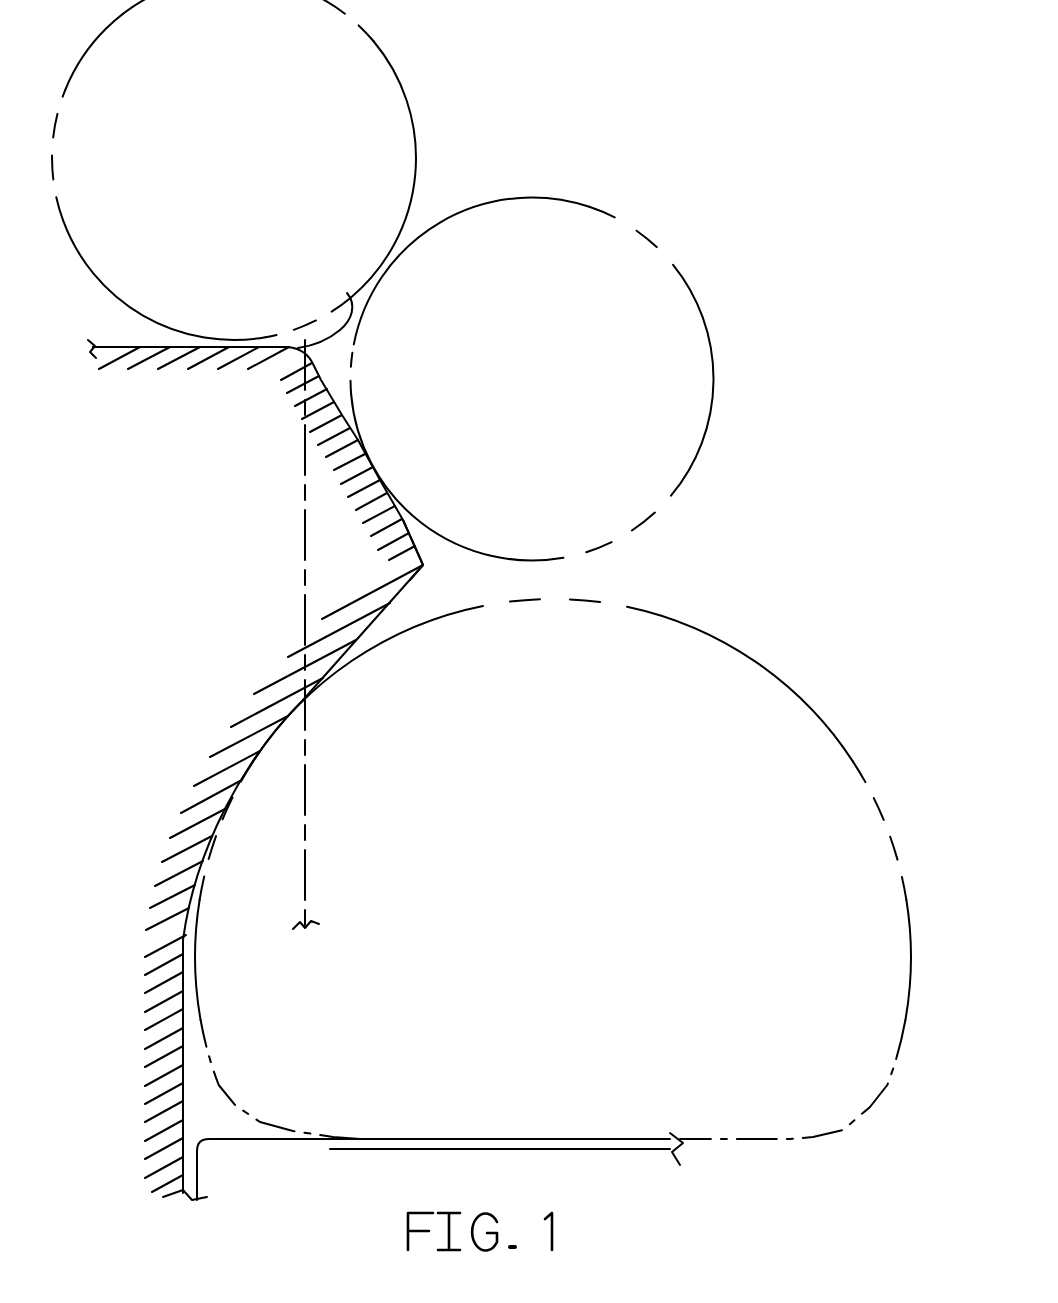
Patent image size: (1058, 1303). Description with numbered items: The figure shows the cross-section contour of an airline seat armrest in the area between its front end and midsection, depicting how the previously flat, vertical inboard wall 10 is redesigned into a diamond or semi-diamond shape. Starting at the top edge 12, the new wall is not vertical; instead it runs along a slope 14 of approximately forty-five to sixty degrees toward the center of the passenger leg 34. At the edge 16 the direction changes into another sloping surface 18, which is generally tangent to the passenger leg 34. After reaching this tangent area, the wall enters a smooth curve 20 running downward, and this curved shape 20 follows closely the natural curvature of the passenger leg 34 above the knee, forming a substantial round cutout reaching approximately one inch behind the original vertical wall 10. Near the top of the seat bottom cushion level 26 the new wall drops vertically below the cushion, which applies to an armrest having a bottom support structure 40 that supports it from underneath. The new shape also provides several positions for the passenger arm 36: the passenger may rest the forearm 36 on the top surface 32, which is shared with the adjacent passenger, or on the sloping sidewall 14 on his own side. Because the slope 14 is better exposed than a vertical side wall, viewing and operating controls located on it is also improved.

The inboard wall 10 is at (305, 500).
The top edge 12 is at (341, 301).
The slope 14 is at (360, 433).
The edge 16 is at (425, 565).
The sloping surface 18 is at (382, 640).
The smooth curve 20 is at (209, 842).
The seat bottom cushion level 26 is at (233, 1145).
The top surface 32 is at (142, 347).
The passenger leg 34 is at (665, 617).
The passenger arm 36 is at (401, 97).
The bottom support structure 40 is at (147, 1188).